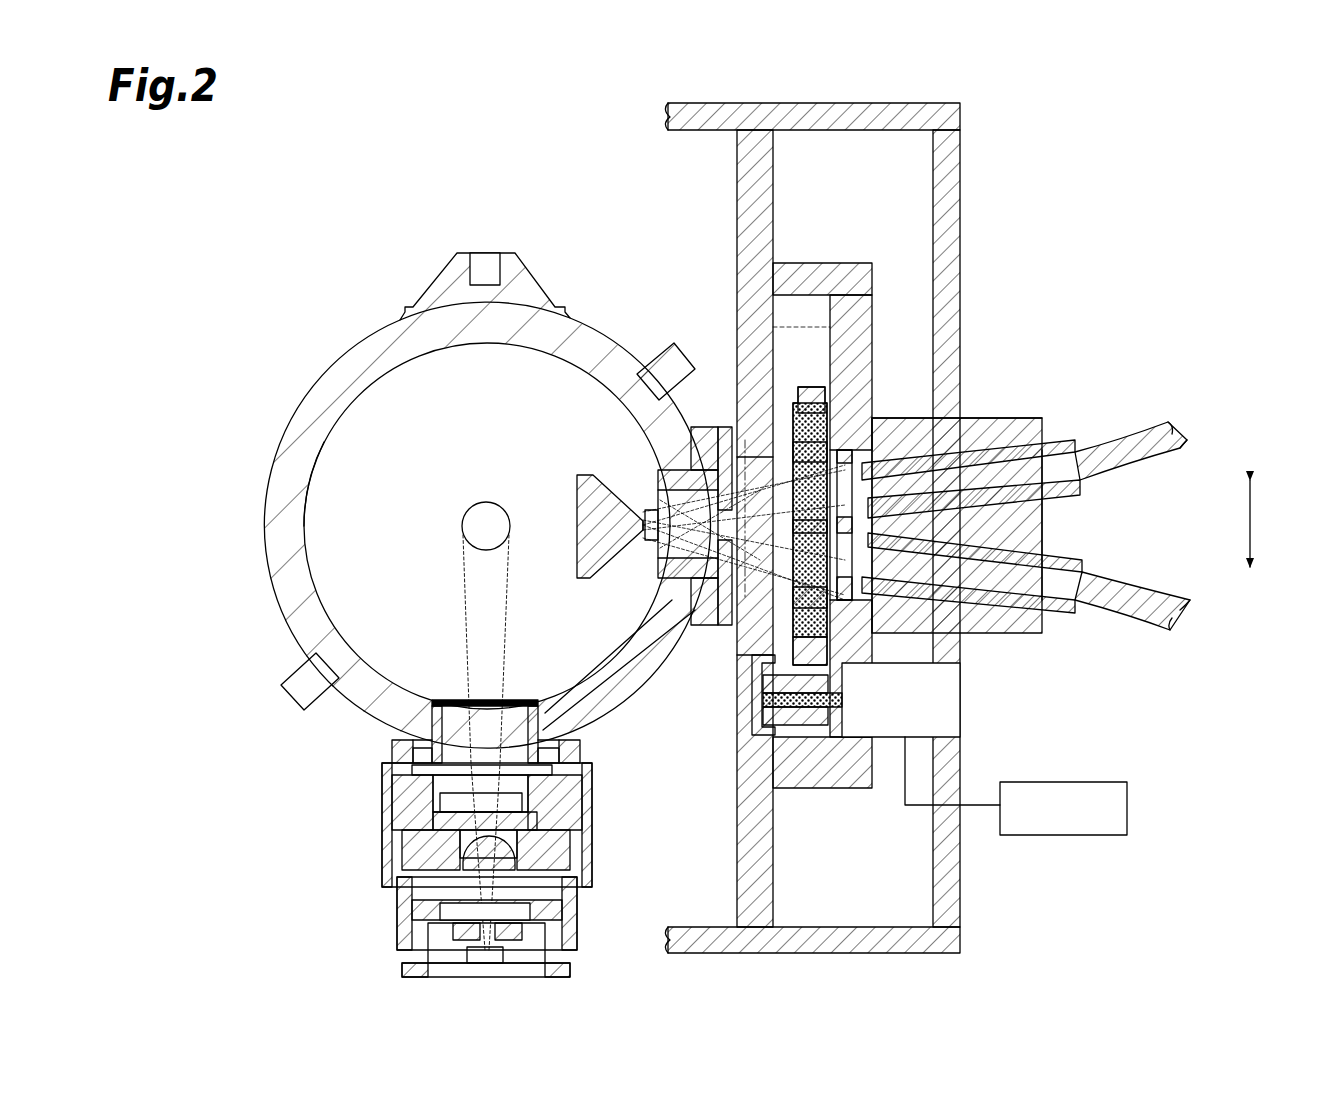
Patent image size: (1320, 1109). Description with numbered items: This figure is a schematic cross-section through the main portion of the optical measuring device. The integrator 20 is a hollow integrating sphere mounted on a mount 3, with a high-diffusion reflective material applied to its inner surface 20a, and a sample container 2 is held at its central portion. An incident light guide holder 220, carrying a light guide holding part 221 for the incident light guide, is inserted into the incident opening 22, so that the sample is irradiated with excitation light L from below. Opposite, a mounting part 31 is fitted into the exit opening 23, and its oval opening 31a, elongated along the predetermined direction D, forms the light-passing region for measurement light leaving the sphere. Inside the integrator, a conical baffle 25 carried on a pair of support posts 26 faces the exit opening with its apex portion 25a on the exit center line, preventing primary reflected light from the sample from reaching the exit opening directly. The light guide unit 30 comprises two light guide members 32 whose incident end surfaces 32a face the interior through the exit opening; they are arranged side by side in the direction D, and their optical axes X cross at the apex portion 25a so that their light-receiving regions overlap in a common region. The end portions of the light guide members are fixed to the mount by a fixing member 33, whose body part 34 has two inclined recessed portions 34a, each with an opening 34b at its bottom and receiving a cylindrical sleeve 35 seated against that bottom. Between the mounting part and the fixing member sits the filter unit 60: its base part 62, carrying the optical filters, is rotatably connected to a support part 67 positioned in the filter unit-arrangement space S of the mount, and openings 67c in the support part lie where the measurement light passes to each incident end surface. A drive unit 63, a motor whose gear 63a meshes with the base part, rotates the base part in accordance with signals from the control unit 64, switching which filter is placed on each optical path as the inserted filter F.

The sample container 2 is at (485, 502).
The mount 3 is at (964, 178).
The integrator 20 is at (320, 376).
The inner surface 20a is at (309, 520).
The incident opening 22 is at (447, 700).
The exit opening 23 is at (688, 438).
The baffle 25 is at (586, 472).
The apex portion 25a is at (616, 566).
The support posts 26 is at (658, 528).
The light guide unit 30 is at (1162, 405).
The mounting part 31 is at (700, 625).
The opening 31a is at (668, 612).
The light guide member 32 is at (1118, 440).
The incident end surface 32a is at (848, 450).
The fixing member 33 is at (1022, 412).
The body part 34 is at (1018, 418).
The recessed portion 34a is at (900, 420).
The opening 34b is at (1000, 550).
The sleeve 35 is at (1052, 442).
The filter unit 60 is at (1074, 730).
The base part 62 is at (812, 388).
The drive unit 63 is at (963, 708).
The gear 63a is at (790, 726).
The control unit 64 is at (1130, 808).
The support part 67 is at (852, 598).
The opening 67c is at (822, 400).
The incident light guide holder 220 is at (386, 905).
The light guide holding part 221 is at (470, 950).
The excitation light L is at (465, 608).
The filter unit-arrangement space S is at (770, 327).
The inserted filter F is at (795, 468).
The optical axis X is at (745, 560).
The predetermined direction D is at (1252, 515).